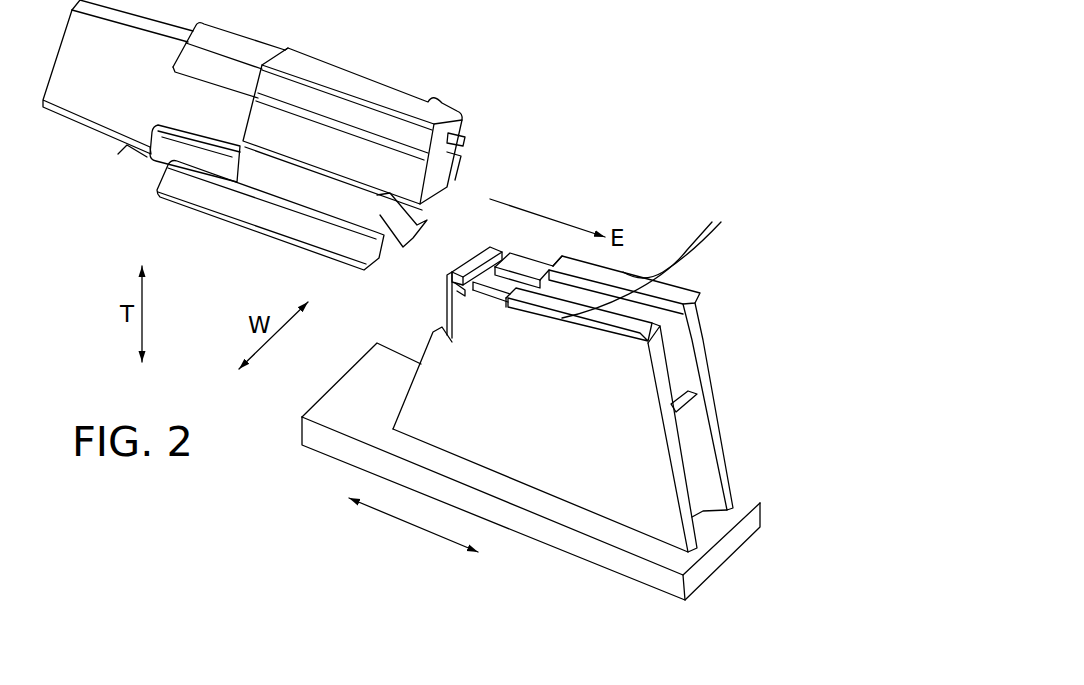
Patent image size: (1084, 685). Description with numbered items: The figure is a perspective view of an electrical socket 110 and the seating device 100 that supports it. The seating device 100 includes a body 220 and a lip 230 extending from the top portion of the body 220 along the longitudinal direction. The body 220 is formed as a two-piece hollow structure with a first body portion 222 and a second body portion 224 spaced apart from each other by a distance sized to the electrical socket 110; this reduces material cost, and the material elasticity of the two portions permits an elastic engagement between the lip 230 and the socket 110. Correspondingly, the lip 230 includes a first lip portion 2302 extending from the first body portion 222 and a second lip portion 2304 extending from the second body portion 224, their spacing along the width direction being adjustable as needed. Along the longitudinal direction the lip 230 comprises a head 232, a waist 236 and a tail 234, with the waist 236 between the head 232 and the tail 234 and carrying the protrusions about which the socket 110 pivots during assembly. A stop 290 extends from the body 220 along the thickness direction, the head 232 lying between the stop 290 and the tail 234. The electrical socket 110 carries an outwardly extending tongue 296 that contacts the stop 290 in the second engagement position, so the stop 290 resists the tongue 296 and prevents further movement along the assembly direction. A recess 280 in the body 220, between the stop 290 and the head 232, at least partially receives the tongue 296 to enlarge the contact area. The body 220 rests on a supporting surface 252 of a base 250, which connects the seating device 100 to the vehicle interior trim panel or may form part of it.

The seating device 100 is at (746, 181).
The electrical socket 110 is at (333, 56).
The body 220 is at (506, 434).
The first body portion 222 is at (679, 458).
The second body portion 224 is at (709, 389).
The lip 230 is at (563, 375).
The head 232 is at (571, 245).
The tail 234 is at (700, 278).
The waist 236 is at (652, 259).
The first lip portion 2302 is at (580, 349).
The second lip portion 2304 is at (654, 261).
The base 250 is at (717, 556).
The supporting surface 252 is at (390, 411).
The recess 280 is at (460, 303).
The stop 290 is at (461, 257).
The tongue 296 is at (123, 153).